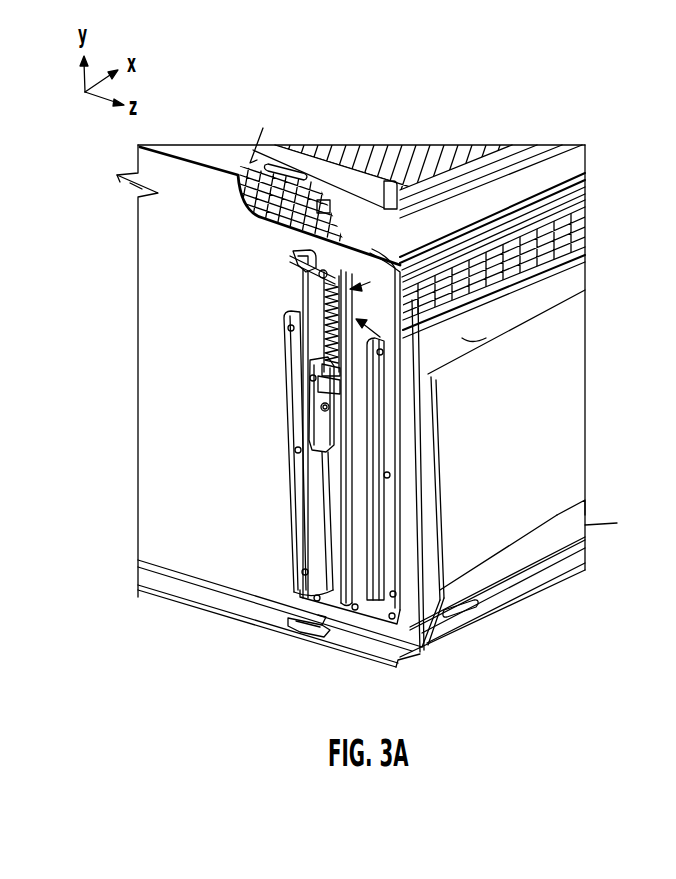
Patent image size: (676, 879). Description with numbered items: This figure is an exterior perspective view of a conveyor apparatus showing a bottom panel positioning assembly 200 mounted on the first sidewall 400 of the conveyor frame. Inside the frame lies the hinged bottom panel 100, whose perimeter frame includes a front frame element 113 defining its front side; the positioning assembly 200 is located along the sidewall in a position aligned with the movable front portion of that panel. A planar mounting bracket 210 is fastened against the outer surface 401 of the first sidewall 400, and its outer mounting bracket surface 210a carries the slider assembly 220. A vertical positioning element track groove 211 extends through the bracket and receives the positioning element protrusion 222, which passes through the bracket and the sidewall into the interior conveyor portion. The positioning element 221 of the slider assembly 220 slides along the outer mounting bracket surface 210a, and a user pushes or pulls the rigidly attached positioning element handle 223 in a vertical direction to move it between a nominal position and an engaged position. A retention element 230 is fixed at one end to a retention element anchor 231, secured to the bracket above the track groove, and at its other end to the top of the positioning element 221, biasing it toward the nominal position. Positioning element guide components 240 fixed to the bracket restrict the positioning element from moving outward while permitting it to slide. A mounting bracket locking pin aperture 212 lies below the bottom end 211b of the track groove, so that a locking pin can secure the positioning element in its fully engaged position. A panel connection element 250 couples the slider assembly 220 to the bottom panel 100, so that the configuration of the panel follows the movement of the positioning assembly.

The bottom panel 100 is at (497, 615).
The front frame element 113 is at (520, 577).
The bottom panel positioning assembly 200 is at (256, 578).
The mounting bracket 210 is at (430, 378).
The outer mounting bracket surface 210a is at (347, 517).
The positioning element track groove 211 is at (368, 480).
The bottom end of the positioning element track groove 211b is at (432, 240).
The mounting bracket locking pin aperture 212 is at (422, 650).
The slider assembly 220 is at (268, 352).
The positioning element 221 is at (336, 388).
The positioning element protrusion 222 is at (336, 410).
The positioning element handle 223 is at (307, 400).
The retention element 230 is at (318, 312).
The retention element anchor 231 is at (296, 257).
The positioning element guide component 240 is at (322, 465).
The panel connection element 250 is at (300, 633).
The first sidewall 400 is at (107, 371).
The outer surface 401 is at (160, 432).